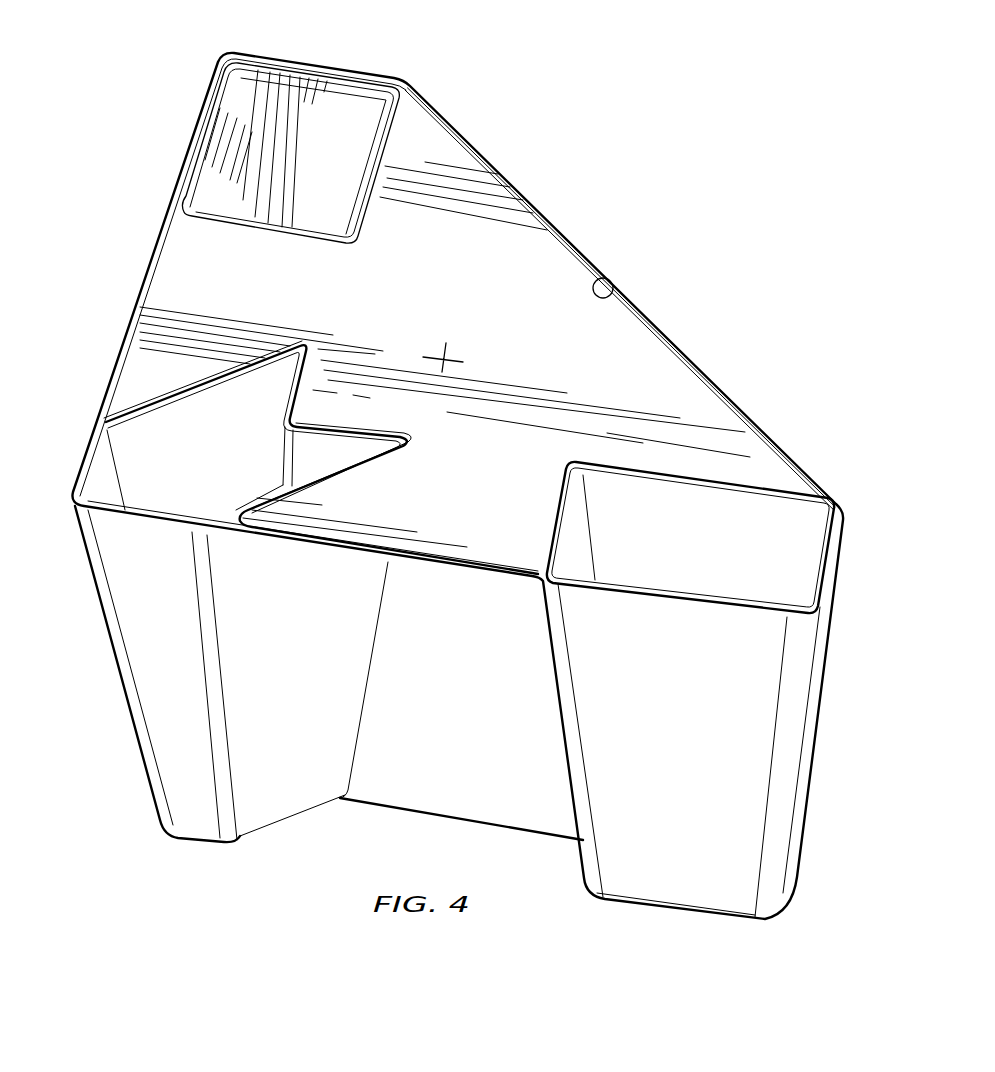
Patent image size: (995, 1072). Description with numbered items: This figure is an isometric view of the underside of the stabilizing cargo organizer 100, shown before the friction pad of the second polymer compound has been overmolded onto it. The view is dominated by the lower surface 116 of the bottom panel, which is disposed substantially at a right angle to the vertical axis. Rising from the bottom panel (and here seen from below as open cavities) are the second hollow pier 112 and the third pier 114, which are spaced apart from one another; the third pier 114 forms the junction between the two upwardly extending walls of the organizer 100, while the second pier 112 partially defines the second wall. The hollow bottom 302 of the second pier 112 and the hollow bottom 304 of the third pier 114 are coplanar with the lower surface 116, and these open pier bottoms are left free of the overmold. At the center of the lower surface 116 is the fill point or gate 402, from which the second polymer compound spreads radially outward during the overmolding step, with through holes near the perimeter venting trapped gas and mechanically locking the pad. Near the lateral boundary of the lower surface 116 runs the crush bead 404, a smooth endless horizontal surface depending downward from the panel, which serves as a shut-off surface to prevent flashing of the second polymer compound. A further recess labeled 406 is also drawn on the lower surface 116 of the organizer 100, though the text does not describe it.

The organizer 100 is at (457, 486).
The second hollow pier 112 is at (661, 673).
The third pier 114 is at (136, 615).
The lower surface 116 is at (329, 304).
The hollow bottom of the second pier 302 is at (613, 548).
The hollow bottom of the third pier 304 is at (217, 470).
The central fill point or gate 402 is at (444, 343).
The crush bead 404 is at (608, 280).
The pocket recess 406 is at (343, 124).